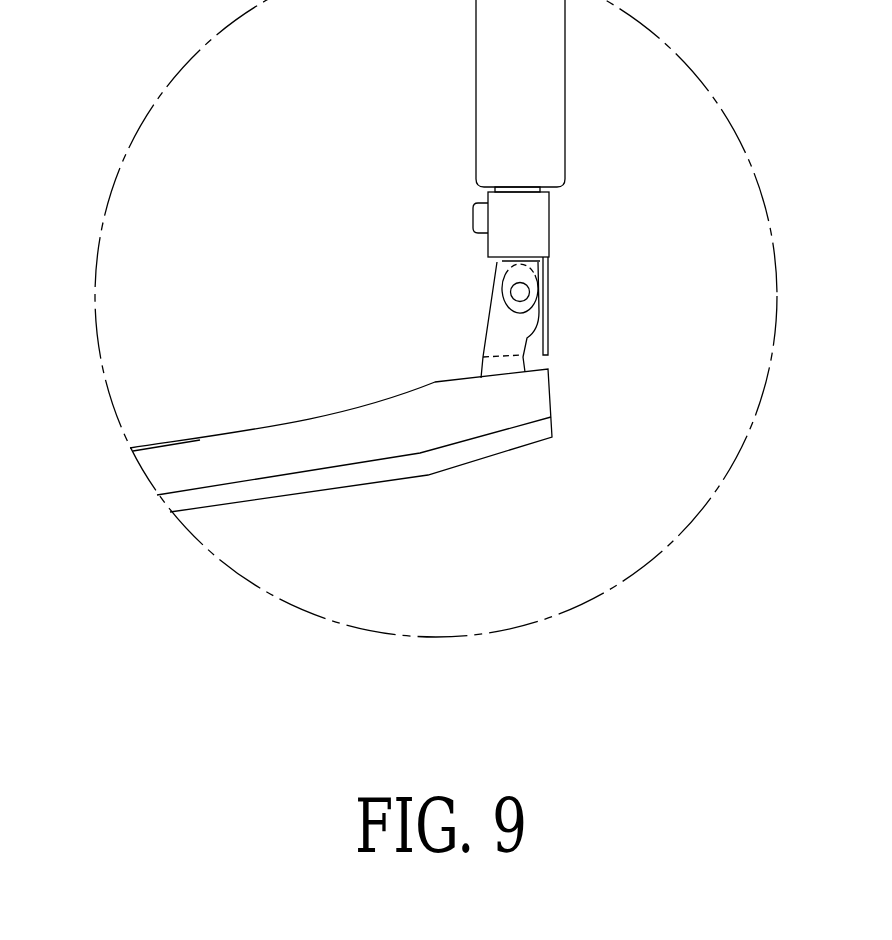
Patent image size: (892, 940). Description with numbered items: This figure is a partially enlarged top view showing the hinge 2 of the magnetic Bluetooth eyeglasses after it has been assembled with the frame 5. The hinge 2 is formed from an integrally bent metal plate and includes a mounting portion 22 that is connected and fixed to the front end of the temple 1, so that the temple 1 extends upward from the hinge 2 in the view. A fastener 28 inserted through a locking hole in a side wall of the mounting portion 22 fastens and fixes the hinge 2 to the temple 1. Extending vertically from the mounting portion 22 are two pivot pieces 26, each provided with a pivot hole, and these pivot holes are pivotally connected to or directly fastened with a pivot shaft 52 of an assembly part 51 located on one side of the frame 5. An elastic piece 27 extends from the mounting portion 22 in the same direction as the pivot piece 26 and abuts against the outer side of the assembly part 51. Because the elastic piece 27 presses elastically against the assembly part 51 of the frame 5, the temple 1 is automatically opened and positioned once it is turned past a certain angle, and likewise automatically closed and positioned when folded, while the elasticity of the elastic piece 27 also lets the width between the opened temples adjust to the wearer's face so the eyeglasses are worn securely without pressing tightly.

The temple 1 is at (505, 97).
The hinge 2 is at (600, 182).
The mounting portion 22 is at (541, 222).
The pivot piece 26 is at (503, 265).
The elastic piece 27 is at (548, 330).
The fastener 28 is at (477, 213).
The frame 5 is at (335, 440).
The assembly part 51 is at (495, 333).
The pivot shaft 52 is at (523, 290).